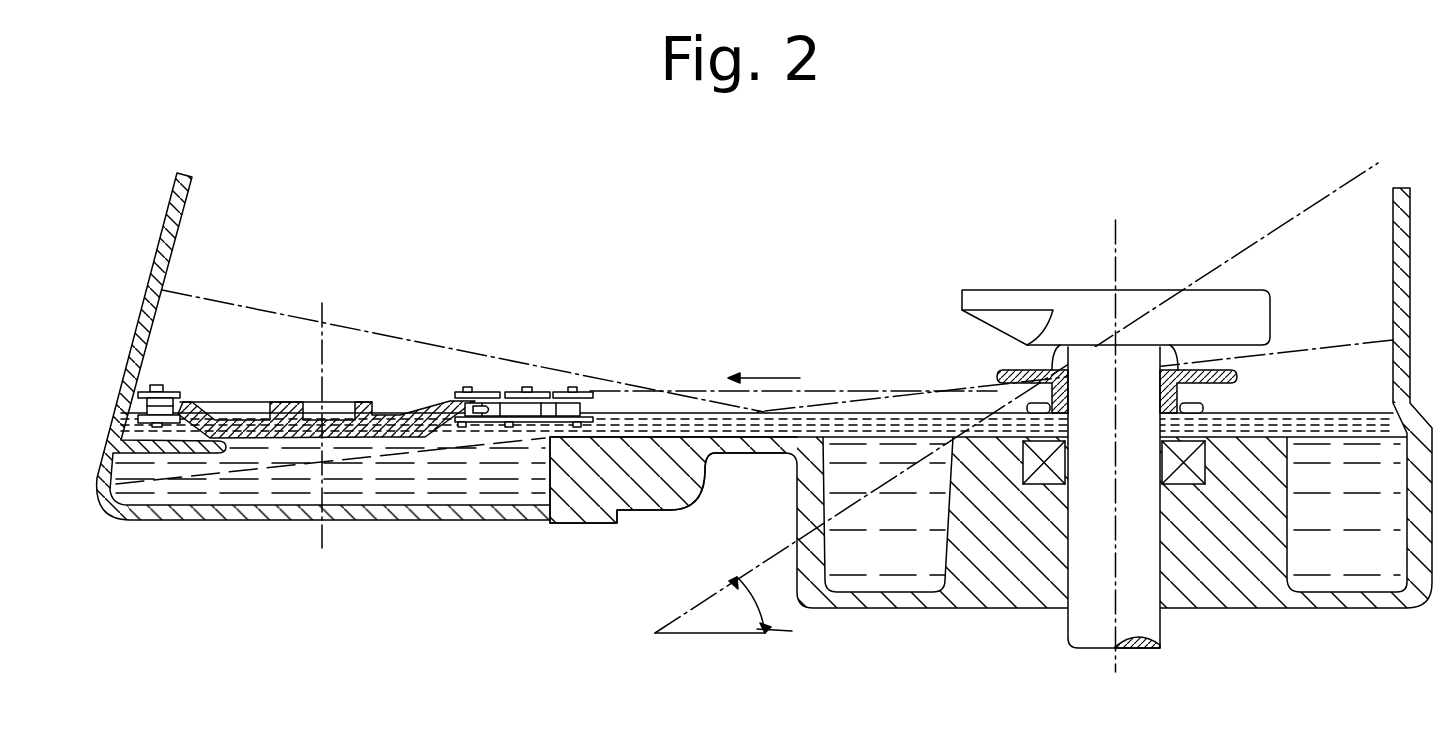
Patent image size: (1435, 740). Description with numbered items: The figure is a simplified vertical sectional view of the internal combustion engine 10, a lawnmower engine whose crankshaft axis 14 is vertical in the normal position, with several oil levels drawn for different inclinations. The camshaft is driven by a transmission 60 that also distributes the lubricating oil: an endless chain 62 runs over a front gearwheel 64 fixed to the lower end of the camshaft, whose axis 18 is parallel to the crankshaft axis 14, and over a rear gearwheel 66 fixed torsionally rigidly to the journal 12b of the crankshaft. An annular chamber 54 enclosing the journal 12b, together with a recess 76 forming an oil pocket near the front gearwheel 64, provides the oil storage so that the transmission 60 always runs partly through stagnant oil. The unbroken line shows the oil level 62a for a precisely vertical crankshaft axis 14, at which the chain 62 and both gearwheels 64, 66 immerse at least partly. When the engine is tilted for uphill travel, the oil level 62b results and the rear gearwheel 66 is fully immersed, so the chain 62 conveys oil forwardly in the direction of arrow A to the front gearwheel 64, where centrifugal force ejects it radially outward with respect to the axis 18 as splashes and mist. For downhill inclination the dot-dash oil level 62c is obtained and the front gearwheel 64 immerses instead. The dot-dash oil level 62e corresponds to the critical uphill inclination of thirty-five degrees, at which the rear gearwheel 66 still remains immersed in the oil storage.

The internal combustion engine 10 is at (293, 148).
The journal of the crankshaft 12b is at (1147, 620).
The crankshaft axis 14 is at (1113, 247).
The camshaft axis 18 is at (326, 310).
The annular chamber 54 is at (1403, 573).
The transmission 60 is at (587, 381).
The endless chain 62 is at (480, 388).
The oil level 62a is at (1313, 413).
The oil level 62b is at (1302, 348).
The oil level 62c is at (437, 342).
The oil level 62e is at (1345, 180).
The gearwheel 64 is at (237, 425).
The gearwheel 66 is at (1027, 413).
The recess 76 is at (543, 480).
The arrow A is at (783, 377).